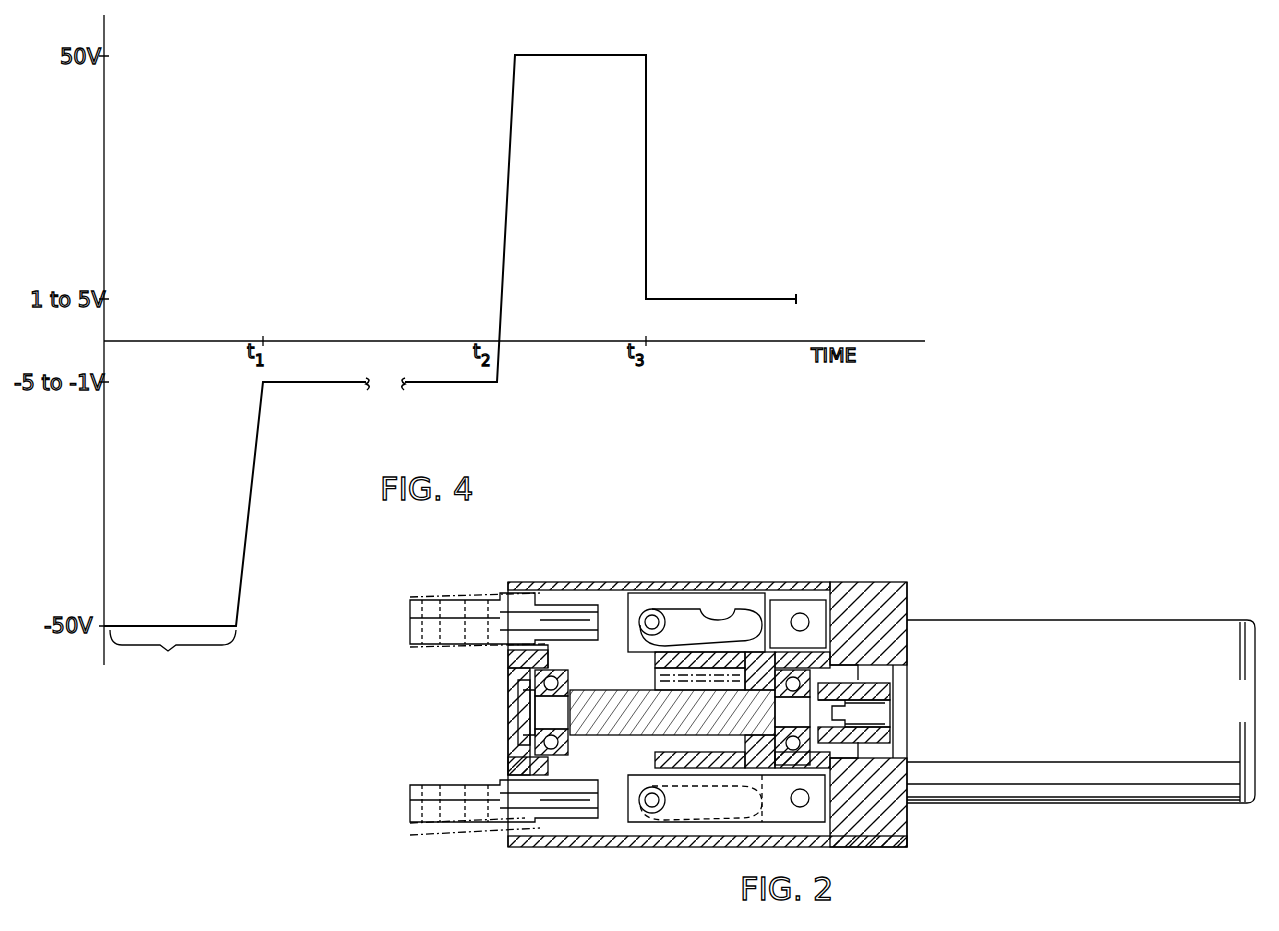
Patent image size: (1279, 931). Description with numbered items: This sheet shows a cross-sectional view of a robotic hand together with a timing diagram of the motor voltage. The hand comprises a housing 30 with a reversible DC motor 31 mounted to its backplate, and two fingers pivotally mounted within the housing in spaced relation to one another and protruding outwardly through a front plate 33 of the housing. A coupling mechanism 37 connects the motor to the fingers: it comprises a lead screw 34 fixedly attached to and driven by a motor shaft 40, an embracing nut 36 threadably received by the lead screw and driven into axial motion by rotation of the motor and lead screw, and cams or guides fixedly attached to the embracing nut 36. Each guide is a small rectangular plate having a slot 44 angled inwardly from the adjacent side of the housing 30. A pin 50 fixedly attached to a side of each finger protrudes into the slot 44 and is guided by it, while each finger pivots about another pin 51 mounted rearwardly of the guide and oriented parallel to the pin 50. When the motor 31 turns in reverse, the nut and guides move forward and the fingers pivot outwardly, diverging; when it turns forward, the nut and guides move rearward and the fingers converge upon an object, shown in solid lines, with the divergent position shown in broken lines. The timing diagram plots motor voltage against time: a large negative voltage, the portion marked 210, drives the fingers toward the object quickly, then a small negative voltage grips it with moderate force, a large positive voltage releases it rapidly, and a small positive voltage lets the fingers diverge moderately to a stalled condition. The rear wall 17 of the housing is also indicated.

In FIG. 4, the negative voltage pulse portion 210 is at (173, 653).
In FIG. 2, the housing 30 is at (565, 848).
In FIG. 2, the end wall 17 is at (880, 598).
In FIG. 2, the front plate 33 is at (520, 659).
In FIG. 2, the slot 44 is at (735, 606).
In FIG. 2, the pin 51 is at (802, 614).
In FIG. 2, the pin 50 is at (645, 626).
In FIG. 2, the lead screw 34 is at (608, 738).
In FIG. 2, the motor shaft 40 is at (886, 712).
In FIG. 2, the embracing nut 36 is at (762, 765).
In FIG. 2, the coupling mechanism 37 is at (876, 757).
In FIG. 2, the reversible DC motor 31 is at (1031, 784).